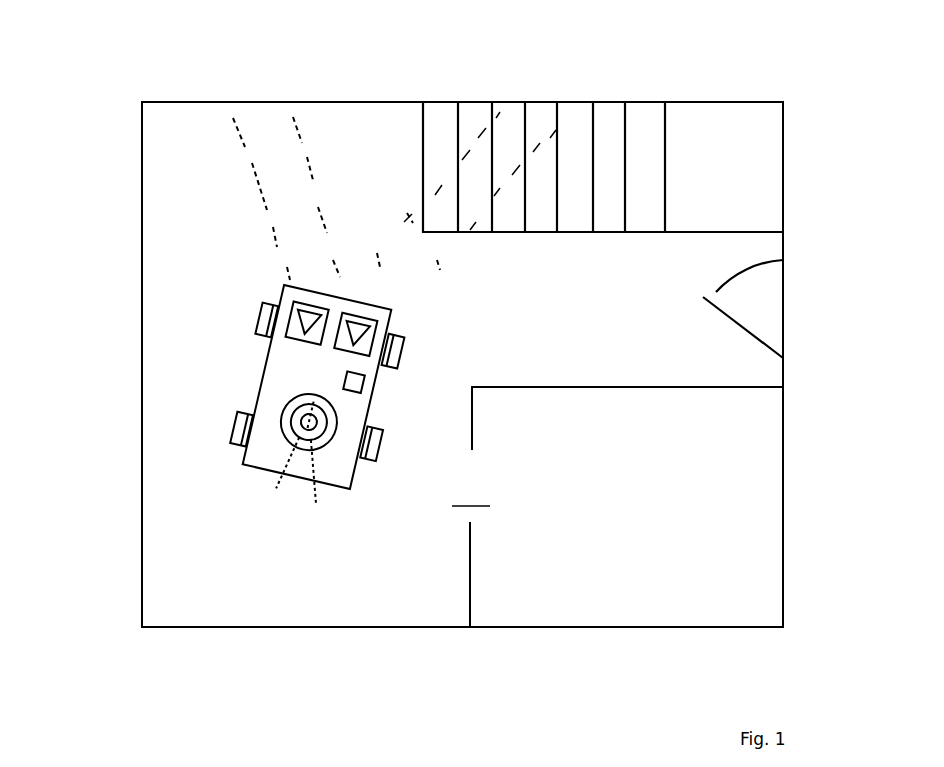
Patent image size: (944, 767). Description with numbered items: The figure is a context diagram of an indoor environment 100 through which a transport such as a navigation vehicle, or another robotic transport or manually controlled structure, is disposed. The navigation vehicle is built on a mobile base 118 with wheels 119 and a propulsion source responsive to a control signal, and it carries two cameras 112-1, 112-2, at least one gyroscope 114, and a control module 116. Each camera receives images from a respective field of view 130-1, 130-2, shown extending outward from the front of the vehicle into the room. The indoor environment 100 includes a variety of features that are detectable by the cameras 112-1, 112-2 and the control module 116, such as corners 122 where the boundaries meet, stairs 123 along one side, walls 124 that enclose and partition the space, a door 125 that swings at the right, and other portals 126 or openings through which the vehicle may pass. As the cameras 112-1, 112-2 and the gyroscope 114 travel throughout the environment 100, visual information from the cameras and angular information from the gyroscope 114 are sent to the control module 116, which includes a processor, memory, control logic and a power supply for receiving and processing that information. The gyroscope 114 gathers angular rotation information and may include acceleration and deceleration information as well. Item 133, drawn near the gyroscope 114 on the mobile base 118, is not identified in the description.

The indoor environment 100 is at (102, 158).
The camera 112-1 is at (300, 312).
The camera 112-2 is at (370, 333).
The gyroscope 114 is at (290, 447).
The control module 116 is at (370, 384).
The mobile base 118 is at (247, 466).
The wheels 119 is at (260, 322).
The corners 122 is at (162, 94).
The stairs 123 is at (422, 160).
The walls 124 is at (377, 90).
The doors 125 is at (742, 338).
The portals 126 is at (471, 497).
The field of view 130-1 is at (306, 262).
The field of view 130-2 is at (345, 268).
The communication link / signal 133 is at (322, 490).